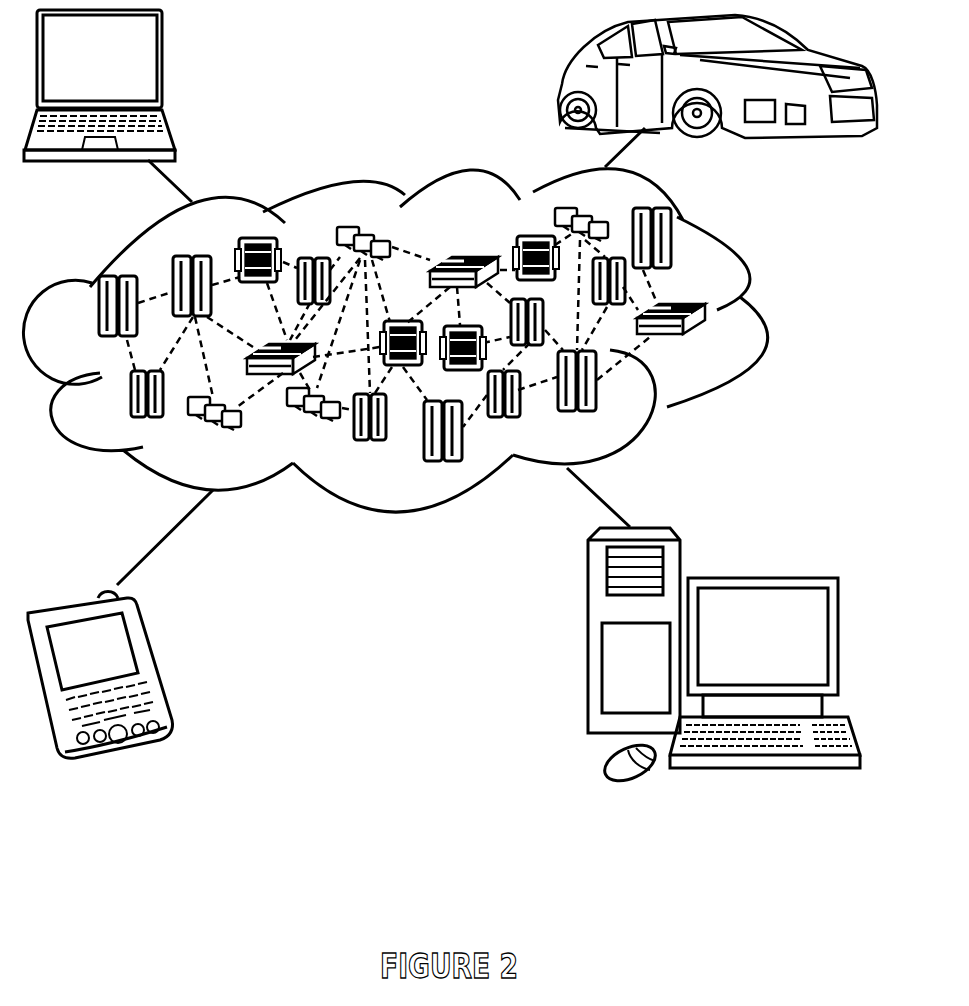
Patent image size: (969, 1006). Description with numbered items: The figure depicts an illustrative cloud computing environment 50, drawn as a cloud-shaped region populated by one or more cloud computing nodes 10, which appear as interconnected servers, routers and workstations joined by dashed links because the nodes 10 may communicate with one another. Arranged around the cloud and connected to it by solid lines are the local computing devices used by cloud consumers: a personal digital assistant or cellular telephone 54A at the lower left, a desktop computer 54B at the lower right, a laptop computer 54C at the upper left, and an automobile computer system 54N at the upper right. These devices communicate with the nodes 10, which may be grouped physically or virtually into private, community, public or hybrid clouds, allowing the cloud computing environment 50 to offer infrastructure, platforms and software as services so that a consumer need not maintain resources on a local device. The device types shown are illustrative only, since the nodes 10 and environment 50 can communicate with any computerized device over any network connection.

The cloud computing nodes 10 is at (722, 350).
The cloud computing environment 50 is at (758, 317).
The personal digital assistant or cellular telephone 54A is at (155, 666).
The desktop computer 54B is at (760, 578).
The laptop computer 54C is at (162, 66).
The automobile computer system 54N is at (560, 82).